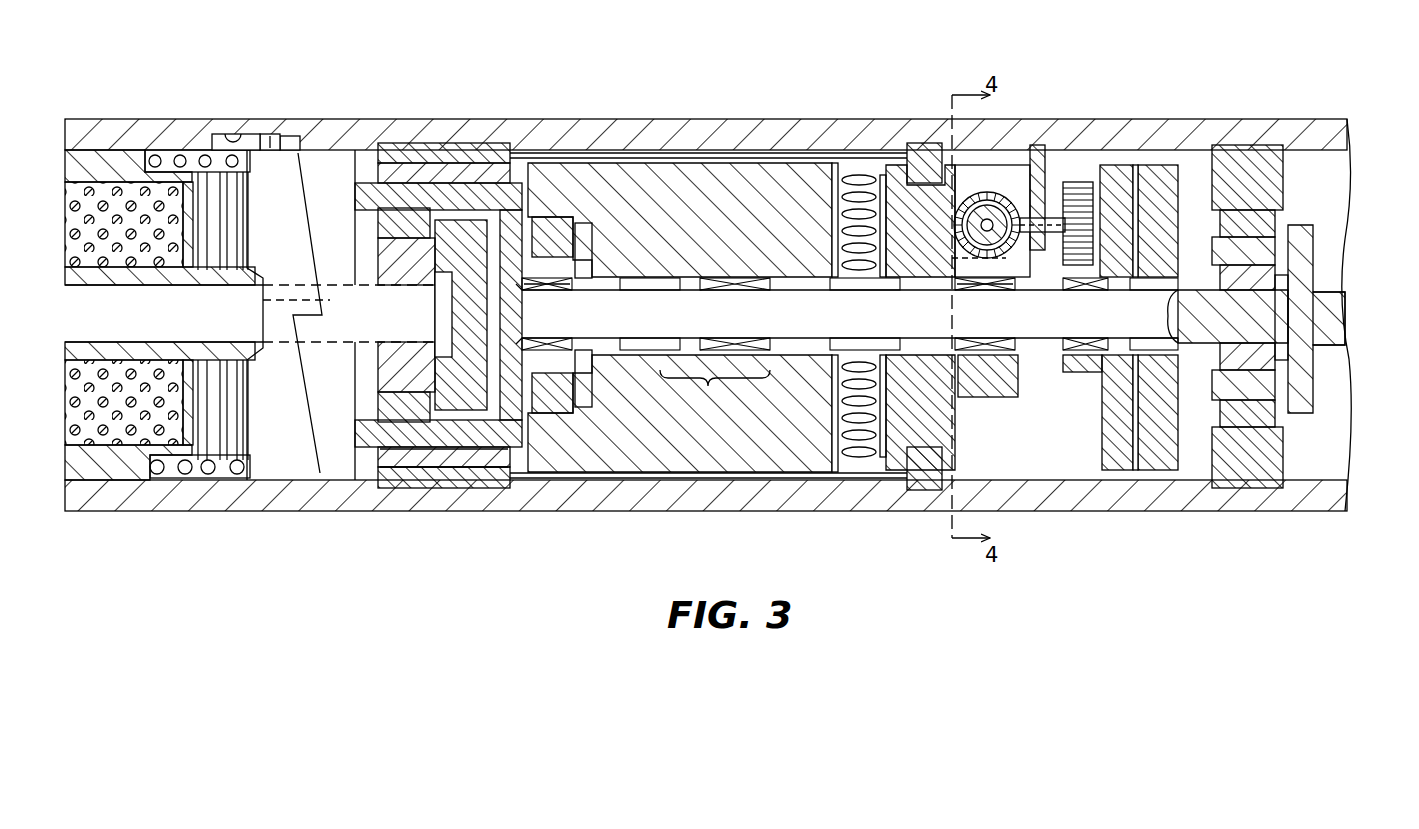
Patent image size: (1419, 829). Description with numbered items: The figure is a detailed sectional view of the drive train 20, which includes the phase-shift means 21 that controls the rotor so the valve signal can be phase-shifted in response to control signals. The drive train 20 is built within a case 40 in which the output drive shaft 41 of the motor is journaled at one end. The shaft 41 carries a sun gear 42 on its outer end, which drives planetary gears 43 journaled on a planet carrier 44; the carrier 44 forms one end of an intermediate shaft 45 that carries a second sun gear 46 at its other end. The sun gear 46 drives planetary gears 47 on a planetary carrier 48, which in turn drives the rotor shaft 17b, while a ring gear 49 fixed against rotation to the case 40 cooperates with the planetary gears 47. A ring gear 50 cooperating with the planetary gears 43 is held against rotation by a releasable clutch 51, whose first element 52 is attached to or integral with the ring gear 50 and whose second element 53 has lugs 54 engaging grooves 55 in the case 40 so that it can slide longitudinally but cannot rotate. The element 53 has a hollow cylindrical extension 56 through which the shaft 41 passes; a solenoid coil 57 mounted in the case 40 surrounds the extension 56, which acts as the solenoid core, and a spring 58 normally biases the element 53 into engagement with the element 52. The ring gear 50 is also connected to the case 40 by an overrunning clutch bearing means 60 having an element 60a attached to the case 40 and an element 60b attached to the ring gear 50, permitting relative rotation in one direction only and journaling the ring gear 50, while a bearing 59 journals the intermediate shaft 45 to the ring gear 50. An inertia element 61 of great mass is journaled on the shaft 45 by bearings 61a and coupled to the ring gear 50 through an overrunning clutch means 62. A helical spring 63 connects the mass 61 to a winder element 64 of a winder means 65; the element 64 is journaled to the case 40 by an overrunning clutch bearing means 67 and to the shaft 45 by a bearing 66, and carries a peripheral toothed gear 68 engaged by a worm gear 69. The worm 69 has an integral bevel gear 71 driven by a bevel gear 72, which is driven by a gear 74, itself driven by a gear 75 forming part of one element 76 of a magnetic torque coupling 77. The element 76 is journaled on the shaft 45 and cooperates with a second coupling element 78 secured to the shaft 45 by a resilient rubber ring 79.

The drive train 20 is at (748, 88).
The case 40 is at (690, 128).
The phase-shift means 21 is at (578, 152).
The solenoid coil 57 is at (110, 178).
The output drive shaft 41 is at (170, 309).
The hollow cylindrical extension 56 is at (205, 268).
The spring 58 is at (183, 478).
The second clutch element 53 is at (288, 207).
The first clutch element 52 is at (340, 376).
The releasable clutch 51 is at (310, 140).
The lugs 54 is at (275, 138).
The grooves 55 is at (232, 136).
The ring gear 50 is at (432, 160).
The overrunning clutch bearing means 60 is at (410, 492).
The clutch element 60a is at (440, 482).
The clutch element 60b is at (497, 457).
The planet carrier 44 is at (468, 222).
The toothed gear 68 is at (400, 226).
The sun gear 42 is at (452, 300).
The planetary gears 43 is at (452, 336).
The intermediate shaft 45 is at (770, 316).
The bearing 59 is at (545, 286).
The bearing 66 is at (960, 292).
The overrunning clutch means 62 is at (558, 215).
The inertia element 61 is at (718, 222).
The bearings 61a is at (715, 386).
The helical spring 63 is at (845, 196).
The winder element 64 is at (932, 234).
The overrunning clutch bearing means 67 is at (918, 145).
The winder means 65 is at (997, 165).
The bevel gear 71 is at (974, 196).
The worm gear 69 is at (958, 250).
The bevel gear 72 is at (1008, 240).
The gear 74 is at (1075, 150).
The coupling element 76 is at (1113, 172).
The gear 75 is at (1080, 374).
The second coupling element 78 is at (1170, 172).
The rubber ring 79 is at (1150, 370).
The magnetic torque coupling 77 is at (1132, 482).
The ring gear 49 is at (1250, 160).
The planetary gears 47 is at (1212, 296).
The sun gear 46 is at (1214, 350).
The planetary carrier 48 is at (1298, 225).
The rotor shaft 17b is at (1330, 300).